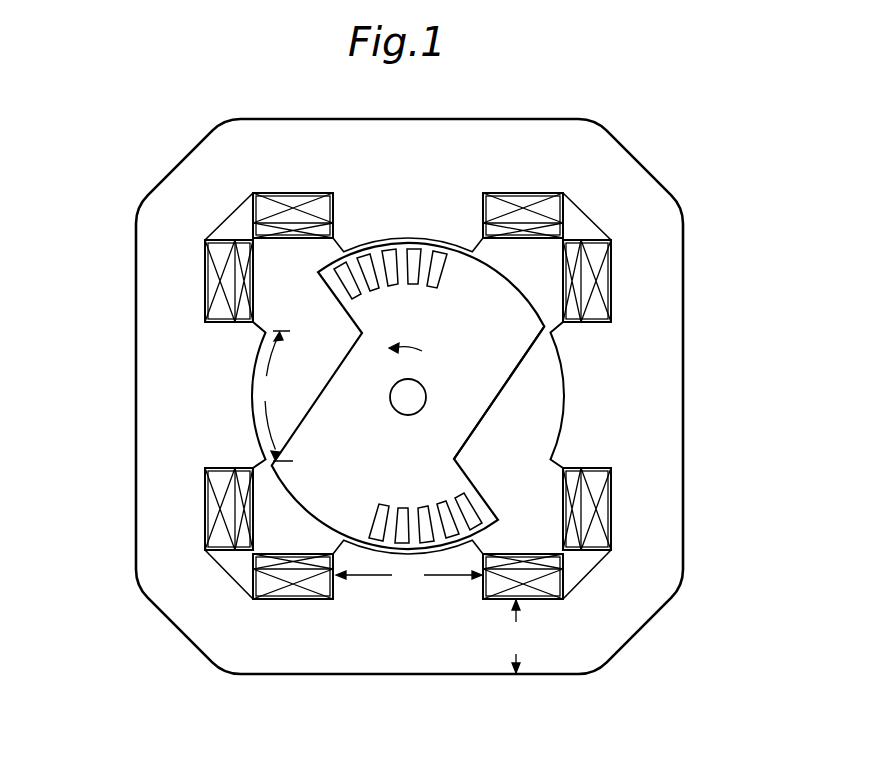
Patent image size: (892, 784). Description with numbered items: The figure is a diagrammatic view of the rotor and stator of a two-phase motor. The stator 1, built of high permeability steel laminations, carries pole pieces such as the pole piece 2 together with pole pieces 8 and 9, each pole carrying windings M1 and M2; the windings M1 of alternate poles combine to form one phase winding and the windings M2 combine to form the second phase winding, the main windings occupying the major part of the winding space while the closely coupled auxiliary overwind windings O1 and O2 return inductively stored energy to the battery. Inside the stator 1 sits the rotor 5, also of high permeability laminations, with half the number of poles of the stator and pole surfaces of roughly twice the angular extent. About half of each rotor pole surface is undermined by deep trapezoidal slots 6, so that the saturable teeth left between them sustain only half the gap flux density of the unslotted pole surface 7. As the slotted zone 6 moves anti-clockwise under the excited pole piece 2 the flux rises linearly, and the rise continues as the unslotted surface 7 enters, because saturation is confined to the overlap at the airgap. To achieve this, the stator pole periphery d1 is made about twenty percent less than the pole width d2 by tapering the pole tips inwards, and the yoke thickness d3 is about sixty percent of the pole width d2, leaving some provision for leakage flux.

The stator 1 is at (307, 145).
The pole piece 2 is at (410, 223).
The rotor 5 is at (490, 357).
The trapezoidal slots 6 is at (428, 260).
The unslotted pole surface 7 is at (632, 302).
The pole piece 8 is at (600, 427).
The pole piece 9 is at (195, 435).
The main winding M1 is at (525, 203).
The main winding M2 is at (602, 270).
The auxiliary winding O1 is at (553, 561).
The auxiliary winding O2 is at (578, 235).
The stator pole periphery dimension d1 is at (276, 396).
The stator pole width d2 is at (409, 580).
The yoke thickness d3 is at (520, 636).